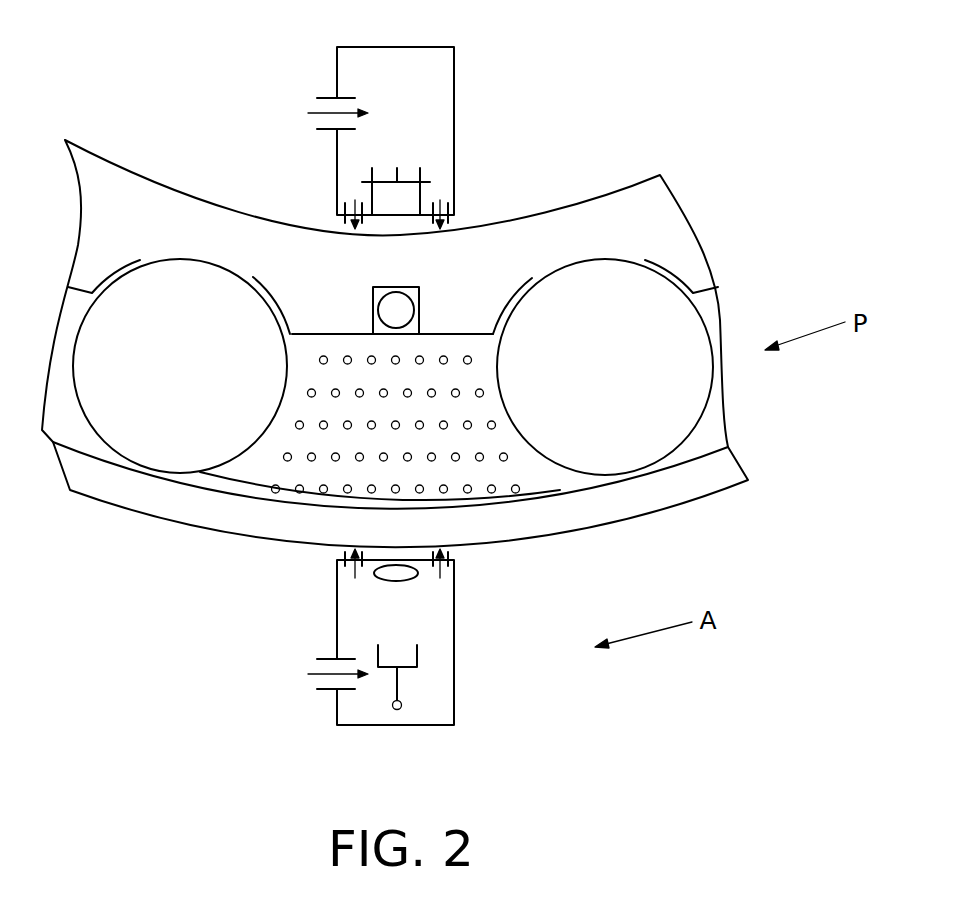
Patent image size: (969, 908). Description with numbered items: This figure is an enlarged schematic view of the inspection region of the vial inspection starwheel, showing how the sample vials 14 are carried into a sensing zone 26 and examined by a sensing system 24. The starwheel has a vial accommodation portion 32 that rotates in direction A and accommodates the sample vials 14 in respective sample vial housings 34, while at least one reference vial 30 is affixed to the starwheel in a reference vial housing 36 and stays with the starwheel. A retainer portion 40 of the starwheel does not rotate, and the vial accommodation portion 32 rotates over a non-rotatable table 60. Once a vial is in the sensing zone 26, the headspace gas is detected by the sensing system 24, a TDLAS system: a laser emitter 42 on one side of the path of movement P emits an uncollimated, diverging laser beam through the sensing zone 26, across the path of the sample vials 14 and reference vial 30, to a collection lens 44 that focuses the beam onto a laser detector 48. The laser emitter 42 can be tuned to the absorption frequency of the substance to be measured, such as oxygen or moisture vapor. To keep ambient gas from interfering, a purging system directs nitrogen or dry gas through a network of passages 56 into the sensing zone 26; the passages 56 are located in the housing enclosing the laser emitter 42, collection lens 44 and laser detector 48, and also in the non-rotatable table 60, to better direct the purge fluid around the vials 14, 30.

The sample vial 14 is at (118, 440).
The sensing system 24 is at (314, 618).
The sensing zone 26 is at (441, 436).
The reference vial 30 is at (395, 302).
The vial accommodation portion 32 is at (677, 227).
The sample vial housing 34 is at (118, 268).
The reference vial housing 36 is at (373, 330).
The retainer portion 40 is at (697, 482).
The laser emitter 42 is at (407, 197).
The collection lens 44 is at (372, 577).
The laser detector 48 is at (402, 690).
The passages 56 is at (333, 98).
The non-rotatable table 60 is at (312, 496).